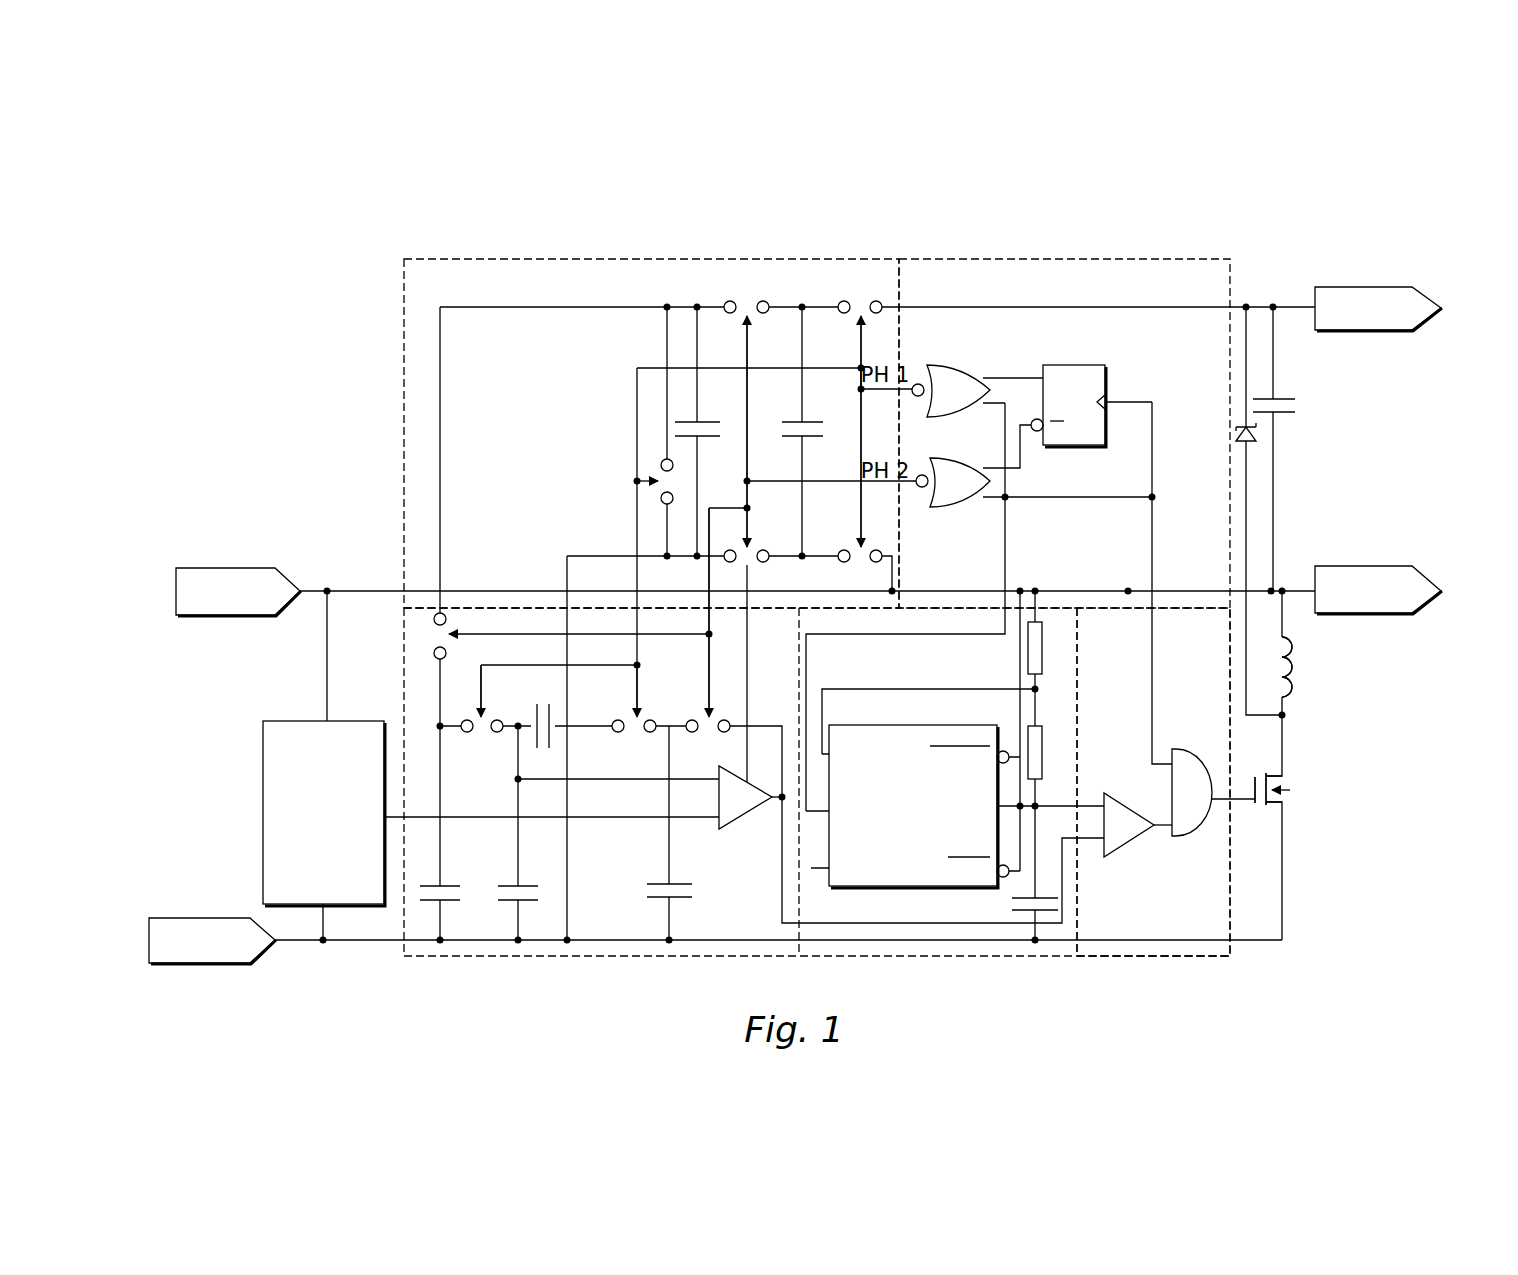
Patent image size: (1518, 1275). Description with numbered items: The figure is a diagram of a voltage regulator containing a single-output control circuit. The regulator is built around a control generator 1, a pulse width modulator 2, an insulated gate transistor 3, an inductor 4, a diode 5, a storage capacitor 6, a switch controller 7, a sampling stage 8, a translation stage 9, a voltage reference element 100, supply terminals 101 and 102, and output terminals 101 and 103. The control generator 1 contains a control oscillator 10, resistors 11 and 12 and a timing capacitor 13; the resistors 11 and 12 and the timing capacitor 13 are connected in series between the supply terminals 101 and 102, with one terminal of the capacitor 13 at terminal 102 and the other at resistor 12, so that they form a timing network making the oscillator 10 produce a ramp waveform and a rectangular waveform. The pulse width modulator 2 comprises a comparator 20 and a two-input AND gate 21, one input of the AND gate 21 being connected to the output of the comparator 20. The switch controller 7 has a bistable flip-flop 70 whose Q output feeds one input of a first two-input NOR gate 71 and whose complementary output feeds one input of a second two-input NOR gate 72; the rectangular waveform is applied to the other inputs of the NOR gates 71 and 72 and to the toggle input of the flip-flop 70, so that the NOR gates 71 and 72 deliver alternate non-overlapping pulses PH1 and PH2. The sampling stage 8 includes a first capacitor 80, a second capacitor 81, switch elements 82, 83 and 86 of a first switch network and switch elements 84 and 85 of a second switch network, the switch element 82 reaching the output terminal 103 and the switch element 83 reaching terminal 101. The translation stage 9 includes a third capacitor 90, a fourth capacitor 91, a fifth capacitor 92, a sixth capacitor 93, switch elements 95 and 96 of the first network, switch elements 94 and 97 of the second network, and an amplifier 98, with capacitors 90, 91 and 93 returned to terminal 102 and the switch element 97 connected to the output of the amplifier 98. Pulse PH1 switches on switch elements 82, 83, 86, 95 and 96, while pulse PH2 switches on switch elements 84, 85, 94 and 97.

The control generator 1 is at (901, 948).
The pulse width modulator 2 is at (1137, 950).
The insulated gate transistor 3 is at (1288, 773).
The inductor 4 is at (1293, 659).
The diode 5 is at (1255, 435).
The storage capacitor 6 is at (1295, 405).
The switch controller 7 is at (1127, 272).
The sampling stage 8 is at (495, 272).
The translation stage 9 is at (640, 948).
The control oscillator 10 is at (863, 732).
The resistor 11 is at (1028, 648).
The resistor 12 is at (1040, 745).
The timing capacitor 13 is at (1057, 900).
The comparator 20 is at (1113, 797).
The two-input AND gate 21 is at (1345, 565).
The bistable flip-flop 70 is at (1105, 375).
The first two-input NOR gate 71 is at (975, 370).
The second two-input NOR gate 72 is at (967, 502).
The first capacitor 80 is at (790, 440).
The second capacitor 81 is at (670, 427).
The switch element 82 is at (885, 290).
The switch element 83 is at (895, 573).
The switch element 84 is at (762, 290).
The switch element 85 is at (757, 540).
The switch element 86 is at (650, 487).
The third capacitor 90 is at (424, 905).
The fourth capacitor 91 is at (508, 905).
The fifth capacitor 92 is at (556, 735).
The sixth capacitor 93 is at (654, 902).
The switch element 94 is at (458, 623).
The switch element 95 is at (456, 740).
The switch element 96 is at (620, 718).
The switch element 97 is at (694, 718).
The amplifier 98 is at (769, 814).
The voltage reference element 100 is at (271, 798).
The supply terminal 101 is at (361, 586).
The supply terminal 102 is at (300, 947).
The output terminal 103 is at (1330, 290).